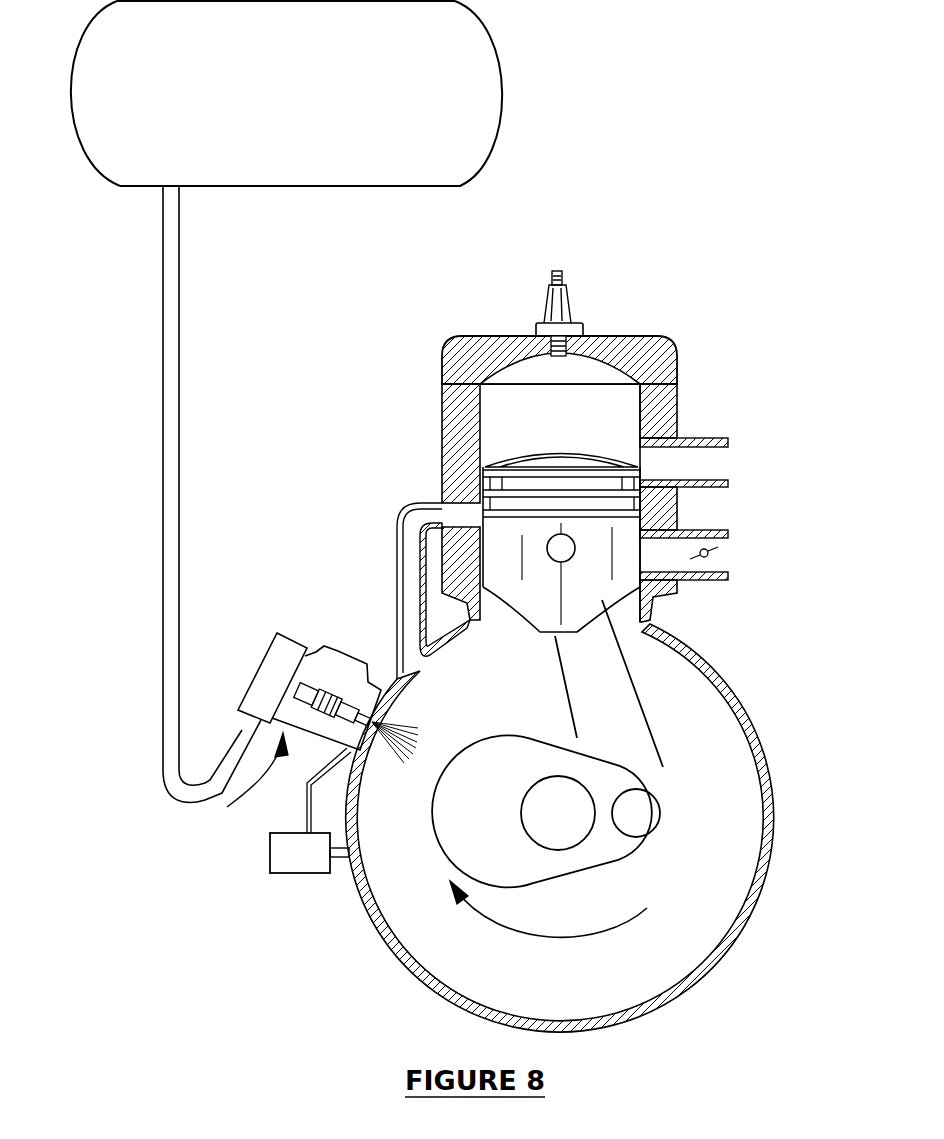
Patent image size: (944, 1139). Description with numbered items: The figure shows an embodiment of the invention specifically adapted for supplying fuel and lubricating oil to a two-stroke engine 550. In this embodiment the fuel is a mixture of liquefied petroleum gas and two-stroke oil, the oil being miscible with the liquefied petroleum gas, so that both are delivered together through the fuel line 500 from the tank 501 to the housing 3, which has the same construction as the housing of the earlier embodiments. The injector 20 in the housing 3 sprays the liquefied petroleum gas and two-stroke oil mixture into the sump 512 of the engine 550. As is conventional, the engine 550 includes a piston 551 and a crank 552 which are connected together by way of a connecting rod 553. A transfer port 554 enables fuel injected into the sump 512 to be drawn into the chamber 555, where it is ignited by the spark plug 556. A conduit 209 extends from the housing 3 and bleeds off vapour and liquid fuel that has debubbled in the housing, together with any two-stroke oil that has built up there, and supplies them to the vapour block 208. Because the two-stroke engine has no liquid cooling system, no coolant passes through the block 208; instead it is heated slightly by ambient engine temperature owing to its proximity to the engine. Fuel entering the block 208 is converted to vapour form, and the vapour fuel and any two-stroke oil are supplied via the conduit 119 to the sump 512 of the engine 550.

The tank 501 is at (256, 116).
The fuel line 500 is at (180, 437).
The housing 3 is at (230, 805).
The injector 20 is at (330, 705).
The conduit 209 is at (307, 783).
The vapour block 208 is at (282, 855).
The conduit 119 is at (342, 862).
The transfer port 554 is at (395, 572).
The chamber 555 is at (503, 405).
The spark plug 556 is at (570, 303).
The piston 551 is at (582, 503).
The connecting rod 553 is at (627, 703).
The crank 552 is at (610, 852).
The two-stroke engine 550 is at (795, 733).
The sump 512 is at (695, 930).